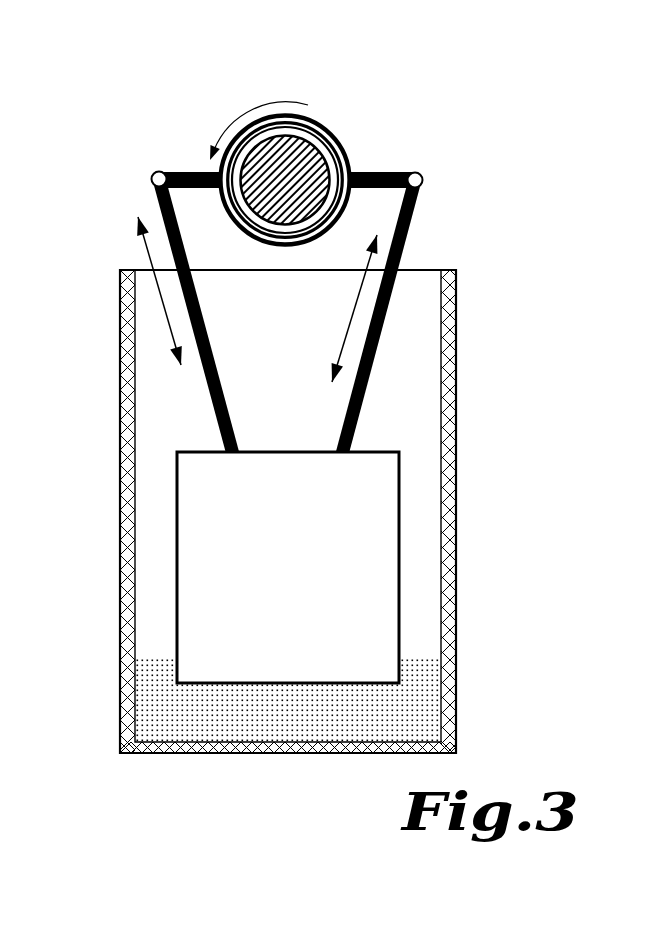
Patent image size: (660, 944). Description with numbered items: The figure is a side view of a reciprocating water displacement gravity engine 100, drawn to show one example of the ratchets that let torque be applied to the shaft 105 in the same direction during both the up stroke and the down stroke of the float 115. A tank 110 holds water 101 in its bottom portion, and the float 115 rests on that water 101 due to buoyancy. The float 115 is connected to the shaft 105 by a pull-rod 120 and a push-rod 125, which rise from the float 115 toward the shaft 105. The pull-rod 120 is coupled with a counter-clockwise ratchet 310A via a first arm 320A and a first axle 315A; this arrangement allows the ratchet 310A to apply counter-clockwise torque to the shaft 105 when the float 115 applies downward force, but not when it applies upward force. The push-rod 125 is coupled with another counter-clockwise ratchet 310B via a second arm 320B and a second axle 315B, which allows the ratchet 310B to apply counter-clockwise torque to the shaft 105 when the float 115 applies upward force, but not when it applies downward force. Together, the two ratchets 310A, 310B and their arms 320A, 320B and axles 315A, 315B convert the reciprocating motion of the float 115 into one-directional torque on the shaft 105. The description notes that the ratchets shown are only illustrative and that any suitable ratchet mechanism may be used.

The reciprocating water displacement gravity engine 100 is at (473, 96).
The water 101 is at (167, 732).
The shaft 105 is at (288, 175).
The tank 110 is at (120, 630).
The float 115 is at (400, 567).
The pull-rod 120 is at (210, 382).
The push-rod 125 is at (373, 352).
The counter-clockwise ratchet 310A is at (288, 130).
The counter-clockwise ratchet 310B is at (343, 163).
The first axle 315A is at (150, 181).
The second axle 315B is at (423, 183).
The first arm 320A is at (180, 171).
The second arm 320B is at (421, 168).